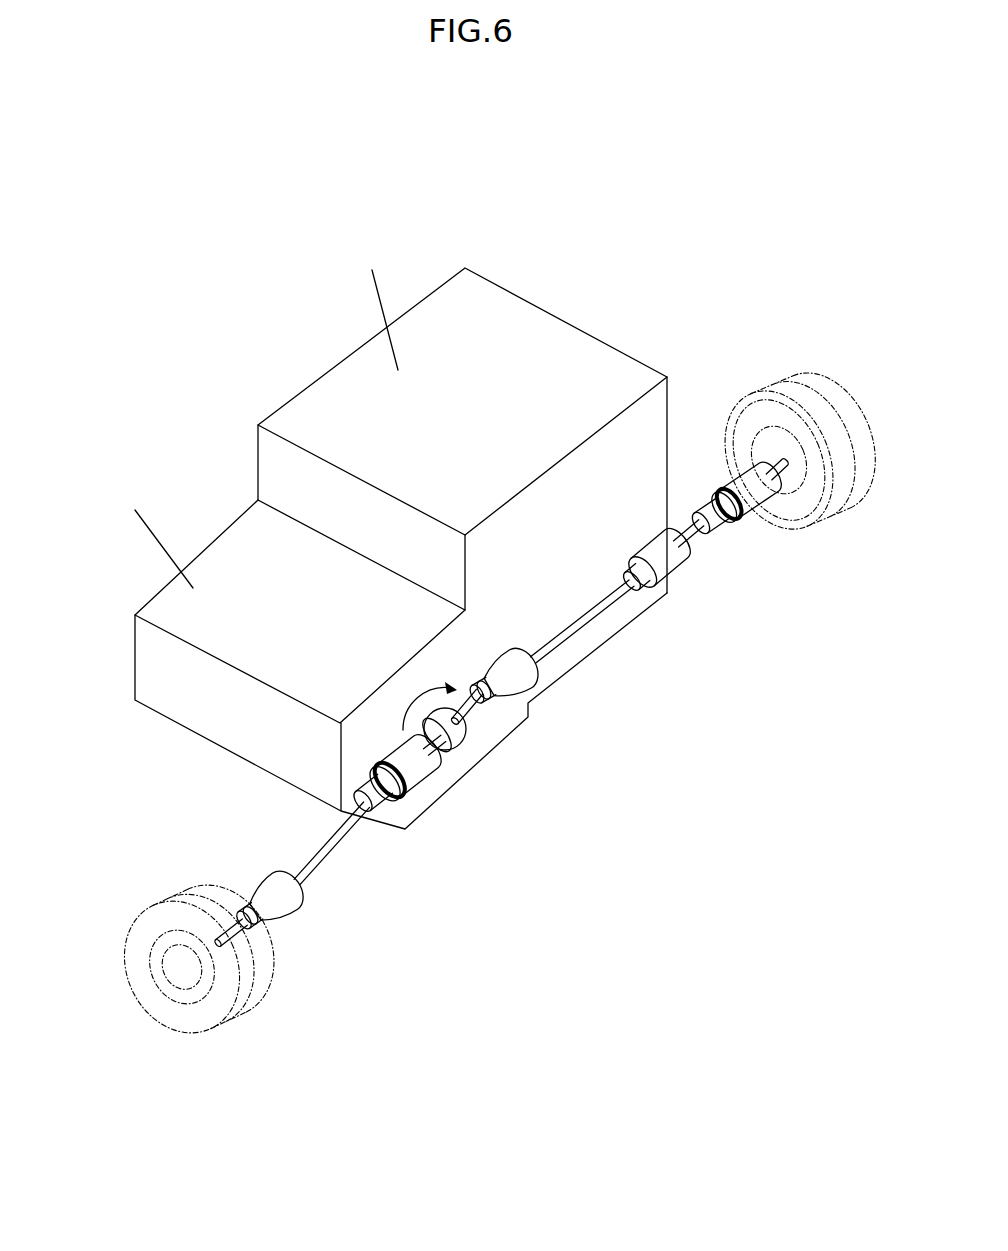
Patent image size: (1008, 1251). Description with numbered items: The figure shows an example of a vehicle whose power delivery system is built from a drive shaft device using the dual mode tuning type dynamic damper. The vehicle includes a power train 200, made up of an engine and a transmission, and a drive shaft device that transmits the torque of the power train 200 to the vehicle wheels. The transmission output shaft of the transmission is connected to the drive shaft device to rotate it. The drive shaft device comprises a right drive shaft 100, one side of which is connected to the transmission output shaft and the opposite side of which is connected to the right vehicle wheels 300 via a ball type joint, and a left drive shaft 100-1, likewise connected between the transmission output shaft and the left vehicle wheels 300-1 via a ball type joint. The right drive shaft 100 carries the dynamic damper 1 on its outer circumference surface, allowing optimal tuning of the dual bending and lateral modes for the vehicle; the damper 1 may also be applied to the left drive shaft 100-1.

The dynamic damper 1 is at (672, 563).
The drive shaft 100 is at (617, 593).
The left drive shaft 100-1 is at (336, 848).
The power train 200 is at (243, 424).
The right vehicle wheels 300 is at (817, 388).
The left vehicle wheels 300-1 is at (210, 1037).